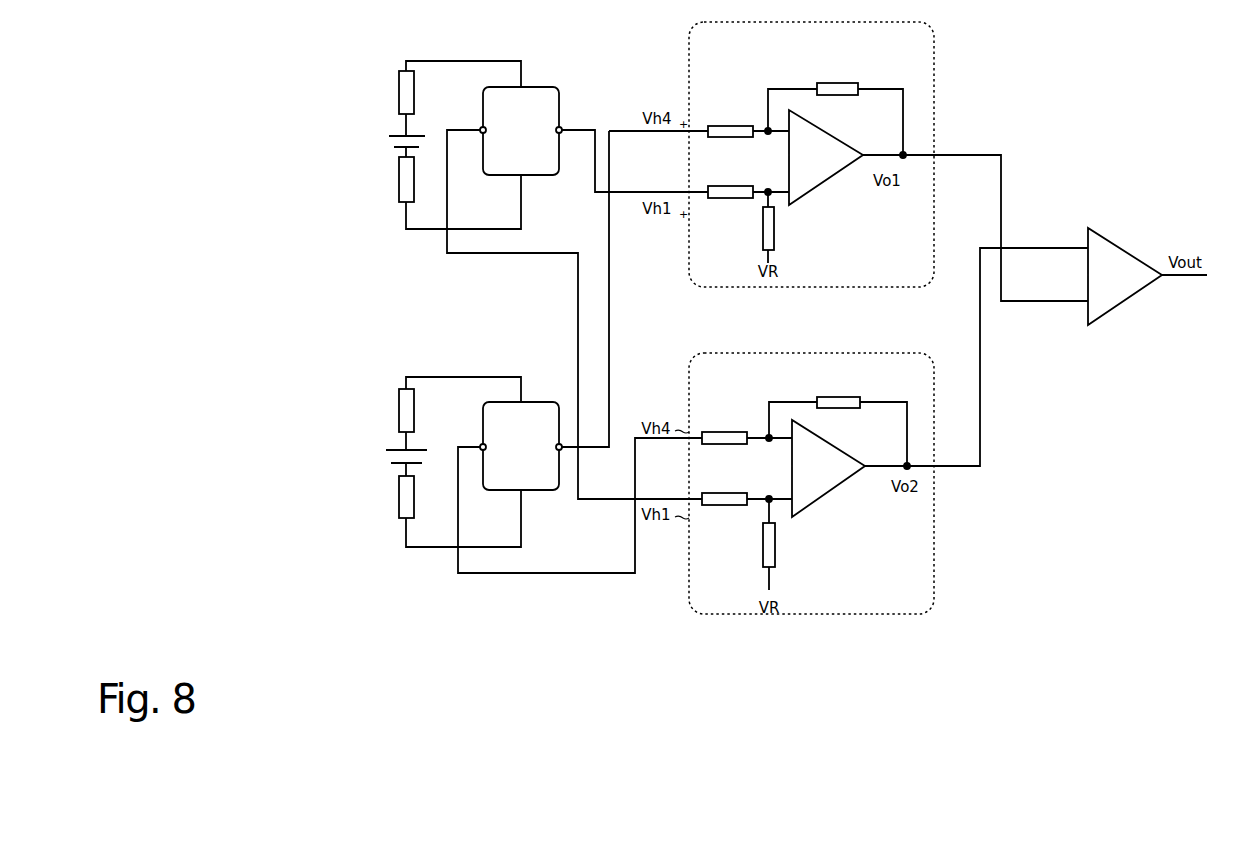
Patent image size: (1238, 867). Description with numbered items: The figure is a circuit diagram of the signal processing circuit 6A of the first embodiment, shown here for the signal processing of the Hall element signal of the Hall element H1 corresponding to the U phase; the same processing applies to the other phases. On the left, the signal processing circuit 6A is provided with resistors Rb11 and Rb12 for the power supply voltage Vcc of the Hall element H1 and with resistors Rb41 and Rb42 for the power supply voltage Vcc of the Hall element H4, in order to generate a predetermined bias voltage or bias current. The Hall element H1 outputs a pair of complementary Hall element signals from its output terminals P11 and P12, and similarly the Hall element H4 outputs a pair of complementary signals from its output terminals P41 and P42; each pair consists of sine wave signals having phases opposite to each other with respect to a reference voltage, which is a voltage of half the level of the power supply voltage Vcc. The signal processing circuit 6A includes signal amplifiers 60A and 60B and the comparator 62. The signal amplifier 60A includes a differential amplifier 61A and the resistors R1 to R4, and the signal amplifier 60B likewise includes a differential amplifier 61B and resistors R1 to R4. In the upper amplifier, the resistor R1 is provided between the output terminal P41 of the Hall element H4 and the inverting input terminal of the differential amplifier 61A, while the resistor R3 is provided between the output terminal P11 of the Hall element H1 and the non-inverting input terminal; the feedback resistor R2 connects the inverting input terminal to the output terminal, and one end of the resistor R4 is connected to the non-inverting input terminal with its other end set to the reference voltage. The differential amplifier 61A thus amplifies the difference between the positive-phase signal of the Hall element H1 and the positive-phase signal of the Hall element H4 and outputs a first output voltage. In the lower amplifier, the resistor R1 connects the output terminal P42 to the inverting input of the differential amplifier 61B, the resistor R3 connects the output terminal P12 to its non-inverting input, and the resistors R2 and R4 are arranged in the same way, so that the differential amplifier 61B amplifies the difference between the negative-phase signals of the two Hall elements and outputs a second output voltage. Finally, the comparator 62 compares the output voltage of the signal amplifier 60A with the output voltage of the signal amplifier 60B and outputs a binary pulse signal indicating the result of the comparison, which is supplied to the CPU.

The resistor Rb11 is at (398, 96).
The resistor Rb12 is at (398, 183).
The resistor Rb41 is at (398, 412).
The resistor Rb42 is at (398, 502).
The power supply voltage Vcc is at (389, 296).
The Hall element H1 is at (521, 131).
The Hall element H4 is at (521, 446).
The output terminal P11 is at (561, 128).
The output terminal P12 is at (481, 128).
The output terminal P41 is at (560, 443).
The output terminal P42 is at (481, 445).
The resistor R1 is at (727, 275).
The feedback resistor R2 is at (838, 236).
The resistor R3 is at (727, 337).
The resistor R4 is at (782, 387).
The signal amplifier 60A is at (893, 290).
The signal amplifier 60B is at (896, 622).
The differential amplifier 61A is at (830, 183).
The differential amplifier 61B is at (832, 492).
The comparator 62 is at (1130, 302).
The signal processing circuit 6A is at (806, 656).